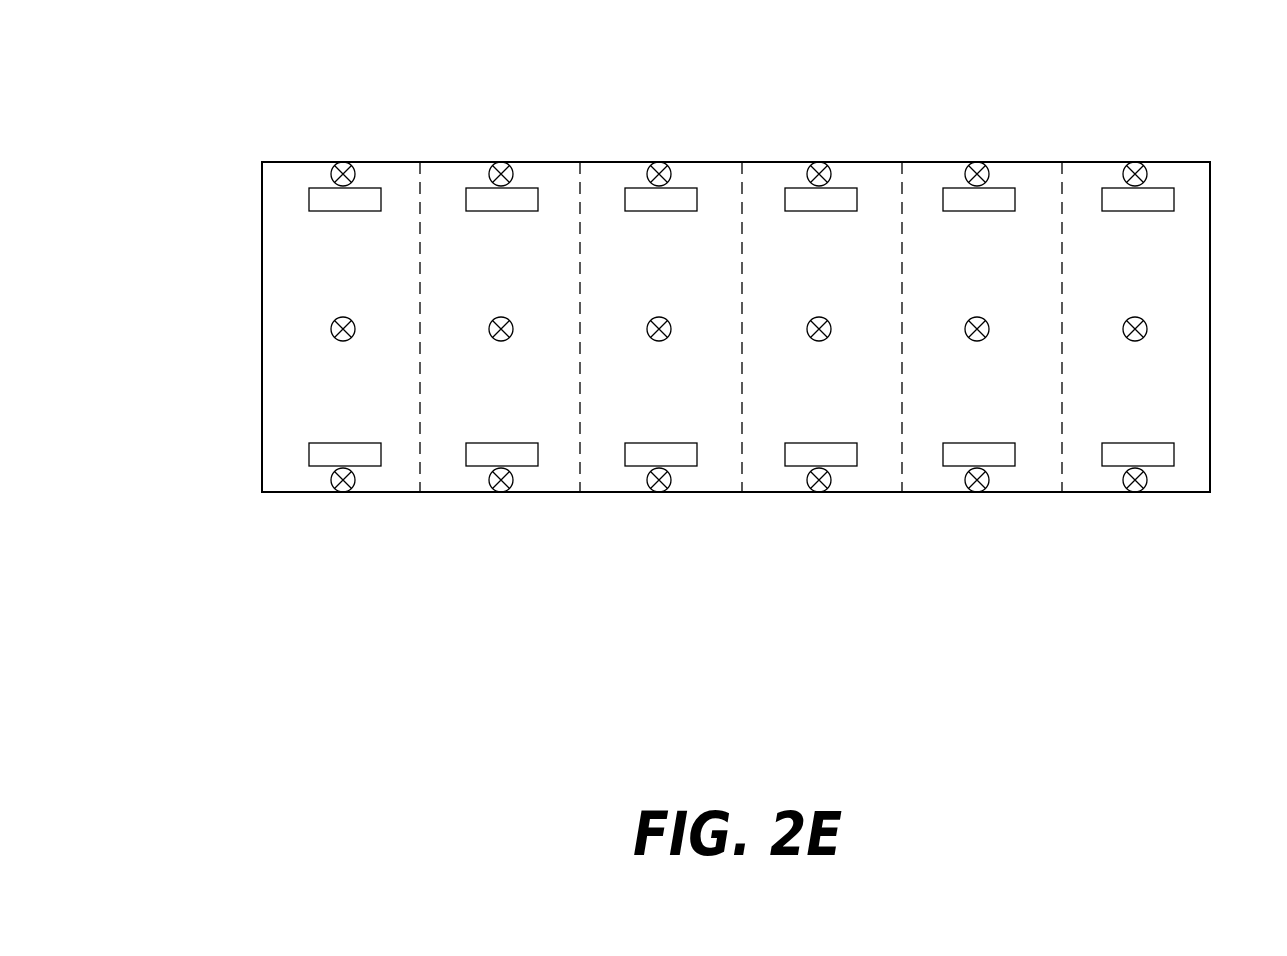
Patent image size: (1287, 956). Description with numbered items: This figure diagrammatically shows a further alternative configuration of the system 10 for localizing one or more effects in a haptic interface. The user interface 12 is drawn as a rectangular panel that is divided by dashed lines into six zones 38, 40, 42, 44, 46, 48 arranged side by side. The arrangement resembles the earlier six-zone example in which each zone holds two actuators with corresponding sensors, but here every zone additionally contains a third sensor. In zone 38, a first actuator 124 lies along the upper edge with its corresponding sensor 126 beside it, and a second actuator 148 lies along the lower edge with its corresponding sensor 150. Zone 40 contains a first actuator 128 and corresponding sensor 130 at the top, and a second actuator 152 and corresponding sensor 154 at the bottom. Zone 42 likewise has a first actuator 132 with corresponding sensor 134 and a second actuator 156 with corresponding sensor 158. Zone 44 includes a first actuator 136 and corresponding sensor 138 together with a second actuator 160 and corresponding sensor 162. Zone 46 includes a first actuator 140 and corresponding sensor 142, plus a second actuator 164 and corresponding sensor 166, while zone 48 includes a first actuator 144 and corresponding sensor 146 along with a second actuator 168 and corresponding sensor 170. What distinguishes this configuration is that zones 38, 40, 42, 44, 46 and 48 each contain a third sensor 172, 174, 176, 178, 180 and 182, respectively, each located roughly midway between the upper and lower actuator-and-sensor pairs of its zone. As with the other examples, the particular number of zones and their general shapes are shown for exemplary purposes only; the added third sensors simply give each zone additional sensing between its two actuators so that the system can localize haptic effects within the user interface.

The lighting assembly 10 is at (155, 181).
The user interface 12 is at (1193, 200).
The zone 38 is at (405, 172).
The zone 40 is at (567, 172).
The zone 42 is at (722, 173).
The zone 44 is at (888, 173).
The zone 46 is at (1052, 172).
The zone 48 is at (1197, 172).
The first actuator 124 is at (309, 187).
The sensor 126 is at (331, 165).
The first actuator 128 is at (468, 187).
The sensor 130 is at (513, 166).
The first actuator 132 is at (632, 187).
The sensor 134 is at (668, 164).
The first actuator 136 is at (790, 187).
The sensor 138 is at (828, 164).
The first actuator 140 is at (948, 187).
The sensor 142 is at (989, 164).
The first actuator 144 is at (1103, 187).
The sensor 146 is at (1147, 164).
The second actuator 148 is at (309, 462).
The sensor 150 is at (343, 492).
The second actuator 152 is at (467, 467).
The sensor 154 is at (508, 492).
The second actuator 156 is at (697, 467).
The sensor 158 is at (653, 492).
The second actuator 160 is at (857, 467).
The sensor 162 is at (812, 492).
The second actuator 164 is at (1015, 467).
The sensor 166 is at (970, 492).
The second actuator 168 is at (1172, 458).
The sensor 170 is at (1152, 493).
The third sensor 172 is at (331, 328).
The third sensor 174 is at (511, 322).
The third sensor 176 is at (669, 322).
The third sensor 178 is at (829, 322).
The third sensor 180 is at (987, 322).
The third sensor 182 is at (1147, 322).